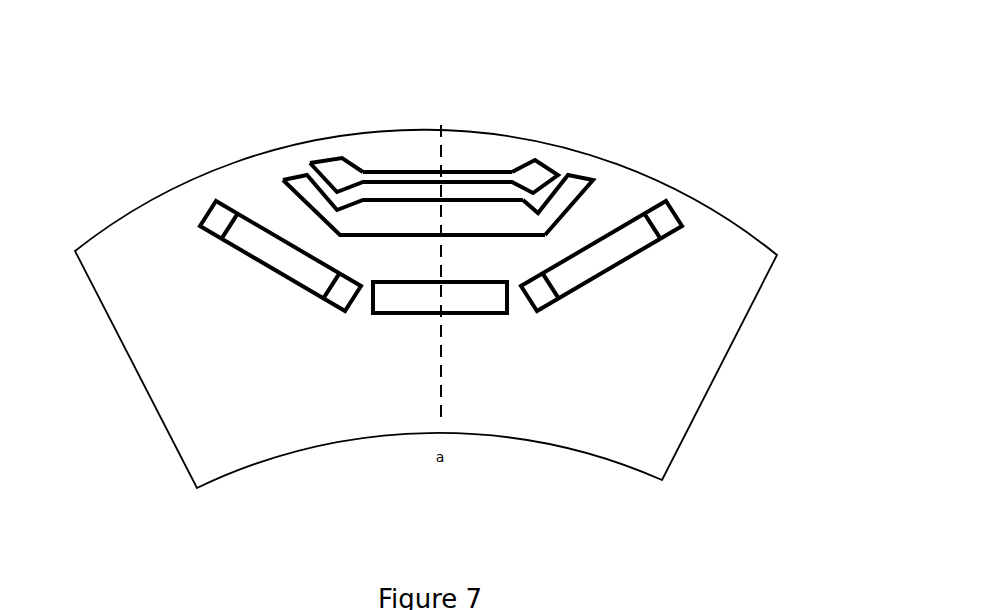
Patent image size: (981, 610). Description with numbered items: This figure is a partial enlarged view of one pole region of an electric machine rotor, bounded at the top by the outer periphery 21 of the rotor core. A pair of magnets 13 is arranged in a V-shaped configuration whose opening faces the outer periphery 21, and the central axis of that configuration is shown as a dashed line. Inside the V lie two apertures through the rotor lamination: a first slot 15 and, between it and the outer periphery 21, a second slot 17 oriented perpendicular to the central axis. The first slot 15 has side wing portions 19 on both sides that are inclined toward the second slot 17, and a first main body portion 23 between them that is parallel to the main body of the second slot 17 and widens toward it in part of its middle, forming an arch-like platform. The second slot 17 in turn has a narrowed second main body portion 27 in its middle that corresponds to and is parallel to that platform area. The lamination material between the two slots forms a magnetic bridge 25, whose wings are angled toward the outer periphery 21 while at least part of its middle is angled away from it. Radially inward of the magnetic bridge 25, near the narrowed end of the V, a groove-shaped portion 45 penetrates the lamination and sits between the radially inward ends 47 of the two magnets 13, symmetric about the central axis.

The magnets 13 is at (600, 262).
The first slot 15 is at (592, 180).
The second slot 17 is at (311, 163).
The side wing portions 19 is at (317, 200).
The outer periphery 21 is at (128, 218).
The first main body portion 23 is at (408, 212).
The magnetic bridge 25 is at (527, 200).
The second main body portion 27 is at (463, 170).
The groove-shaped portion 45 is at (460, 300).
The radially inward ends 47 is at (530, 297).